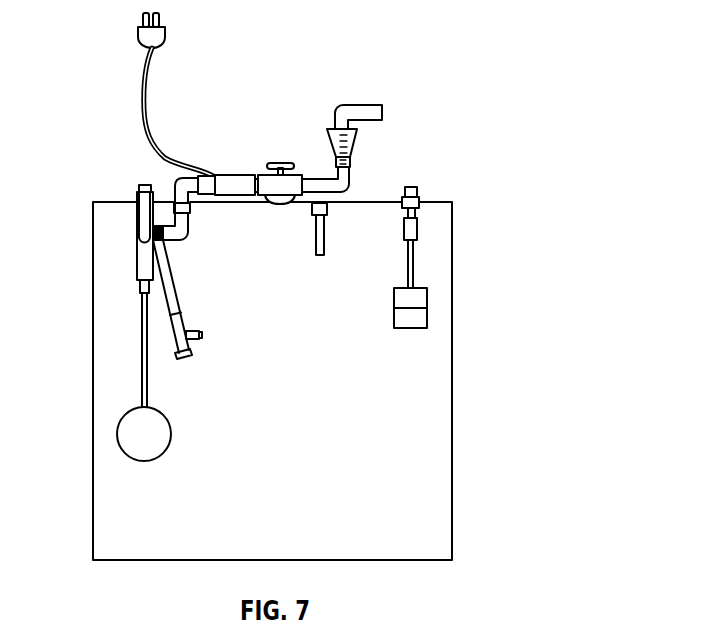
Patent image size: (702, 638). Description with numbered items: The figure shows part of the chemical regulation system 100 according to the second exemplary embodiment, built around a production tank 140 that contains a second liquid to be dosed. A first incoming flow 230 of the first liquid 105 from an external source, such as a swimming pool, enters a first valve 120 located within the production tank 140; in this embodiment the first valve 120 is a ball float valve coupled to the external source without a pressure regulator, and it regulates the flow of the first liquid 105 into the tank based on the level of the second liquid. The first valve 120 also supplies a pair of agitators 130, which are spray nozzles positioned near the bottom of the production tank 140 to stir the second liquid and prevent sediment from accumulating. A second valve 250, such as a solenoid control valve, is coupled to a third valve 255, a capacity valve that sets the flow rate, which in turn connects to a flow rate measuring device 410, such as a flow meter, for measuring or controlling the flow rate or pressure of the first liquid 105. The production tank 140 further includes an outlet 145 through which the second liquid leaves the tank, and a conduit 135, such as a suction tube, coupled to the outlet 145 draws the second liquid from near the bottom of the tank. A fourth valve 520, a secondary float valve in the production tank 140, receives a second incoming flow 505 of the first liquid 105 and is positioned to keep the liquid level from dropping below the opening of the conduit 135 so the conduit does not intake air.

The chemical regulation system 100 is at (575, 58).
The first liquid 105 is at (143, 197).
The first valve 120 is at (137, 262).
The agitator 130 is at (202, 337).
The conduit 135 is at (313, 238).
The production tank 140 is at (452, 392).
The outlet 145 is at (324, 206).
The first incoming flow 230 is at (144, 168).
The second valve 250 is at (233, 174).
The third valve 255 is at (275, 163).
The flow rate measuring device 410 is at (343, 137).
The second incoming flow 505 is at (415, 180).
The fourth valve 520 is at (417, 223).